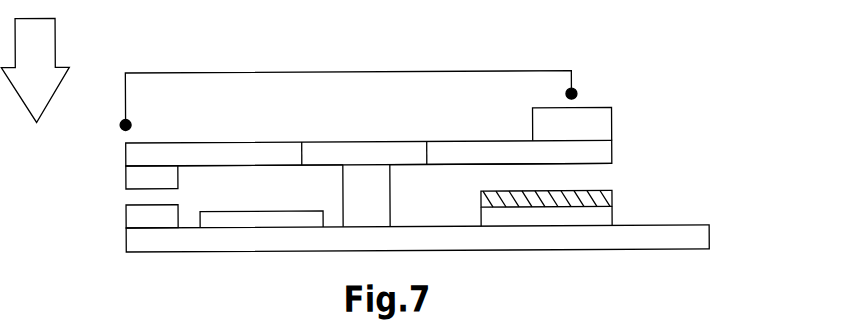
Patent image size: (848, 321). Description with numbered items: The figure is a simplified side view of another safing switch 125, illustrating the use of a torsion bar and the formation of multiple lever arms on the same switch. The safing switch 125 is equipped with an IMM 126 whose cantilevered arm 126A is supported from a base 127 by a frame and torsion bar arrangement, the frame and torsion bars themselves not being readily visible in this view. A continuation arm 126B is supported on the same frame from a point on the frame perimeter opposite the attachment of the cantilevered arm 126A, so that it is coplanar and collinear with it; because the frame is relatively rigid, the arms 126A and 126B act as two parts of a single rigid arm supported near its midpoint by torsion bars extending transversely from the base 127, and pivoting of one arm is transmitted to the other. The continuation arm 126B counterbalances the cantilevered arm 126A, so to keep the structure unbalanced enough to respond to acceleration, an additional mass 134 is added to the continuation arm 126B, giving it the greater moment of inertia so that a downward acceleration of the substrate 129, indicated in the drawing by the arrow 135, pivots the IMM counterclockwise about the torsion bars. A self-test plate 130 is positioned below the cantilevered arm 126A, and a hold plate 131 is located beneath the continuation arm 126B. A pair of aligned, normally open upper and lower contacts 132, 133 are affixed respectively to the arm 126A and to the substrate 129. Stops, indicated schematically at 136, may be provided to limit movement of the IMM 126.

The safing switch 125 is at (276, 50).
The IMM 126 is at (126, 144).
The cantilevered arm 126A is at (192, 168).
The continuation arm 126B is at (540, 168).
The base 127 is at (367, 207).
The substrate 129 is at (709, 243).
The self-test plate 130 is at (277, 209).
The hold plate 131 is at (481, 196).
The upper normally open contact 132 is at (126, 177).
The lower normally open contact 133 is at (126, 213).
The additional mass 134 is at (612, 110).
The applied force 135 is at (40, 42).
The stops 136 is at (201, 73).